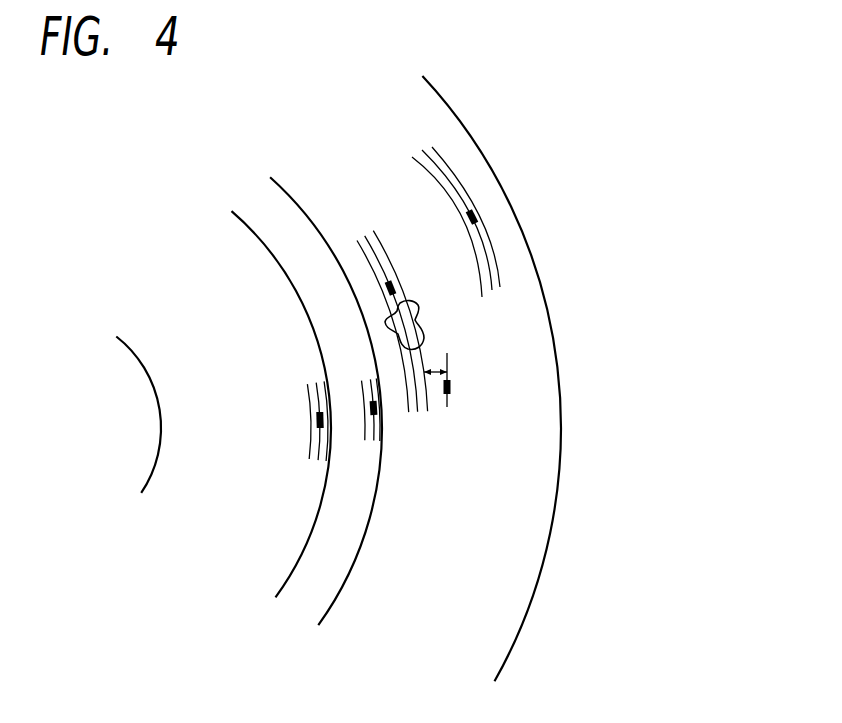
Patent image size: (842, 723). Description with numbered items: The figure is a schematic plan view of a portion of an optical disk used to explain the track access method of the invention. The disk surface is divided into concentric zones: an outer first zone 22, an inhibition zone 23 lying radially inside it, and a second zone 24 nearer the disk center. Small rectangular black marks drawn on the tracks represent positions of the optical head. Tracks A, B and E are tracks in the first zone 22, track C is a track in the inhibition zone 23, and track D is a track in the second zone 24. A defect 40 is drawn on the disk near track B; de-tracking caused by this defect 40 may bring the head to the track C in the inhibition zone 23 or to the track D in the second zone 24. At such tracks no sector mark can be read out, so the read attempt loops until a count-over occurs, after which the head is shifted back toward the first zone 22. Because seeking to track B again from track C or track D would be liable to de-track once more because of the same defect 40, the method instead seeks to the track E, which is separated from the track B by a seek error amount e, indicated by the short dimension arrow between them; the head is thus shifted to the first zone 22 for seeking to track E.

The first zone 22 is at (398, 58).
The inhibition zone 23 is at (271, 178).
The second zone 24 is at (229, 215).
The defect 40 is at (425, 333).
The track A is at (474, 215).
The track B is at (392, 287).
The track C is at (377, 408).
The track D is at (316, 420).
The track E is at (452, 387).
The seek error amount e is at (440, 368).